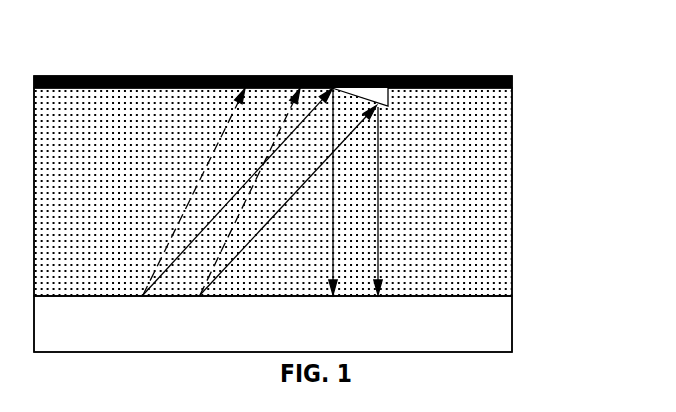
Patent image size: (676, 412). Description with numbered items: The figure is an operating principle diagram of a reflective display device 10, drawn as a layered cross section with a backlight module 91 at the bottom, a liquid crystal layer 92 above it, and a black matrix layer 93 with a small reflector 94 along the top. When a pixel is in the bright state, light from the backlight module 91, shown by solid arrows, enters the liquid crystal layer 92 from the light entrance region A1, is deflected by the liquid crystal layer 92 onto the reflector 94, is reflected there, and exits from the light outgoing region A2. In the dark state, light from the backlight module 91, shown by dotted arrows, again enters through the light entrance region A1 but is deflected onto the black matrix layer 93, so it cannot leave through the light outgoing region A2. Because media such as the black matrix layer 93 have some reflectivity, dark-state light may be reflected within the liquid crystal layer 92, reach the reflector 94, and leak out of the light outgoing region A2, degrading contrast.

The reflective display device 10 is at (585, 48).
The backlight module 91 is at (512, 325).
The liquid crystal layer 92 is at (512, 233).
The black matrix layer 93 is at (513, 75).
The reflector 94 is at (389, 92).
The light entrance region A1 is at (202, 298).
The light outgoing region A2 is at (392, 298).